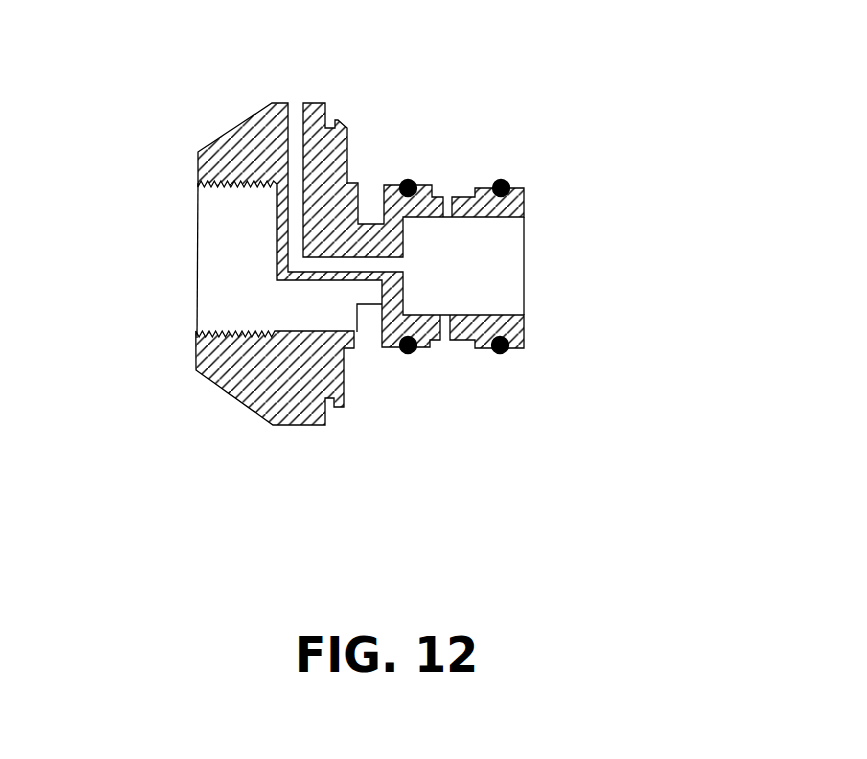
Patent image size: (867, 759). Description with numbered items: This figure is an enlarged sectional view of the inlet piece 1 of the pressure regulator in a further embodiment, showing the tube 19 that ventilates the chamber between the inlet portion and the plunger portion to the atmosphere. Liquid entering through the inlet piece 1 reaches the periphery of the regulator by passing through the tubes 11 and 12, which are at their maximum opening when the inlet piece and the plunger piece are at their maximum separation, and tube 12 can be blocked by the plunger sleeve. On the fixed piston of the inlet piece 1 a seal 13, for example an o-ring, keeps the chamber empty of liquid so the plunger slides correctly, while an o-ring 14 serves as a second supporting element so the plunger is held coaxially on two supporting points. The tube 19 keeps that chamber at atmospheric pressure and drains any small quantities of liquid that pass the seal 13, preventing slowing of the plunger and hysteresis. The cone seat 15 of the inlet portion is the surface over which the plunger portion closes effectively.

The inlet piece 1 is at (246, 463).
The tube 11 is at (308, 313).
The tube 12 is at (373, 200).
The seal 13 is at (415, 181).
The o-ring 14 is at (506, 180).
The cone seat 15 is at (357, 350).
The tube 19 is at (294, 153).